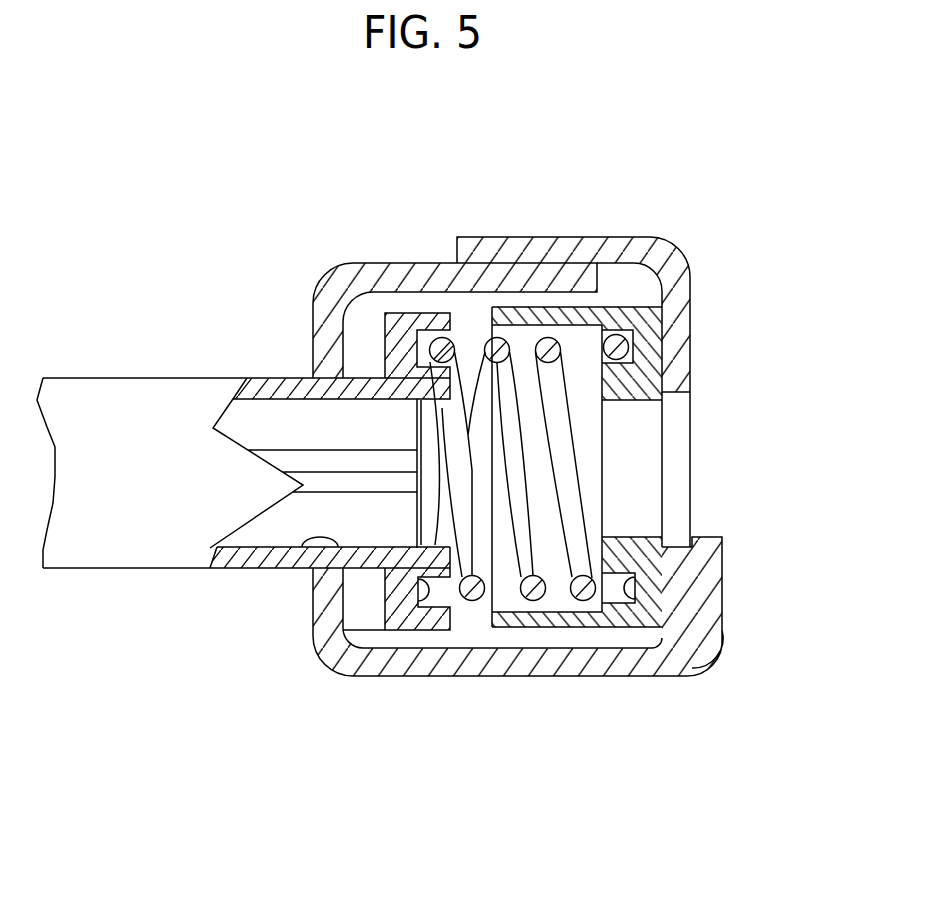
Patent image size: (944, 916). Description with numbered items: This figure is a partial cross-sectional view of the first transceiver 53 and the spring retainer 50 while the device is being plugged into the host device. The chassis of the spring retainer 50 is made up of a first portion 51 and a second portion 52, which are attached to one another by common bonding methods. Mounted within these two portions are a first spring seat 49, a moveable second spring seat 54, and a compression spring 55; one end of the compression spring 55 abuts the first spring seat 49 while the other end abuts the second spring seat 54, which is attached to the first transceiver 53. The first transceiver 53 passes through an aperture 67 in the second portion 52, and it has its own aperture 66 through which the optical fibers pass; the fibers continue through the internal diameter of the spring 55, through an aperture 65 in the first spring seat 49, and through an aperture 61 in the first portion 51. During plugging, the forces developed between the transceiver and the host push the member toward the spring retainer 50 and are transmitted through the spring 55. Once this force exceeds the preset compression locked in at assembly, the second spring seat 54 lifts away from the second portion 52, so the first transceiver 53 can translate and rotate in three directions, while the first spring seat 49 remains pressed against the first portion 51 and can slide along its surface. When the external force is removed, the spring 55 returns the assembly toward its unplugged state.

The first spring seat 49 is at (692, 262).
The spring retainer 50 is at (723, 584).
The first portion 51 is at (645, 236).
The second portion 52 is at (645, 677).
The first transceiver 53 is at (140, 378).
The second spring seat 54 is at (422, 313).
The compression spring 55 is at (474, 360).
The aperture 61 is at (692, 409).
The aperture 65 is at (632, 401).
The aperture 66 is at (286, 560).
The aperture 67 is at (312, 377).